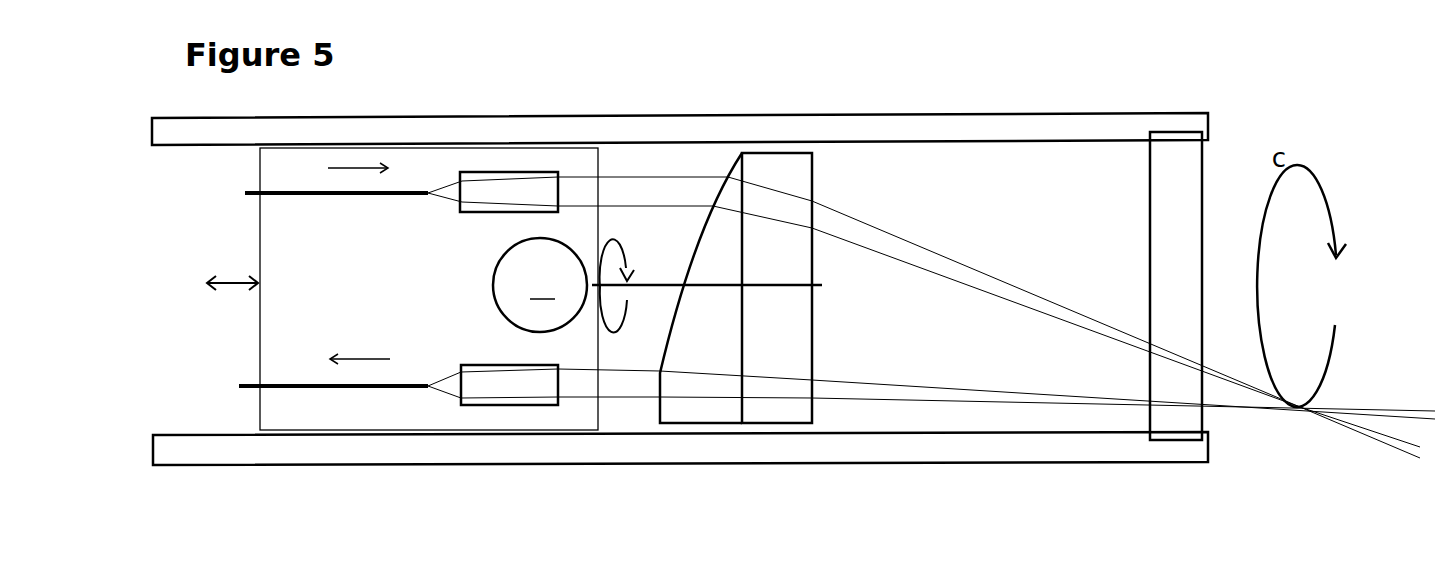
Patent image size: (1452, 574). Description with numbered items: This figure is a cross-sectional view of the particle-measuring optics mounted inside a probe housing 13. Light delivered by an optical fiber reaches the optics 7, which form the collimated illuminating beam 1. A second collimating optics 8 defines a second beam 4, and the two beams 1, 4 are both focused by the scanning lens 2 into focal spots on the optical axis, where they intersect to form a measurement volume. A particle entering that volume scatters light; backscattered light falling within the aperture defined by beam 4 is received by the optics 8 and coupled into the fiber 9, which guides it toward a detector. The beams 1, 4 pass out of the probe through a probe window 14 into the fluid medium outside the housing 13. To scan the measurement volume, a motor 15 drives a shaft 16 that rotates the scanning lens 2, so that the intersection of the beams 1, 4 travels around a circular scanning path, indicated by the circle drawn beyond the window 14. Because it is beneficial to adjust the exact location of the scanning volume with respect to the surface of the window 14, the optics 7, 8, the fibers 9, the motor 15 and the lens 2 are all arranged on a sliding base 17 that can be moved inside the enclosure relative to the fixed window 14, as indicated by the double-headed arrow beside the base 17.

The collimated illuminating beam 1 is at (697, 189).
The scanning lens 2 is at (309, 189).
The beam 4 is at (643, 377).
The optics 7 is at (487, 207).
The second collimating optics 8 is at (500, 369).
The fiber 9 is at (315, 383).
The probe housing 13 is at (995, 117).
The probe window 14 is at (1163, 228).
The motor 15 is at (504, 268).
The shaft 16 is at (663, 285).
The sliding base 17 is at (290, 264).